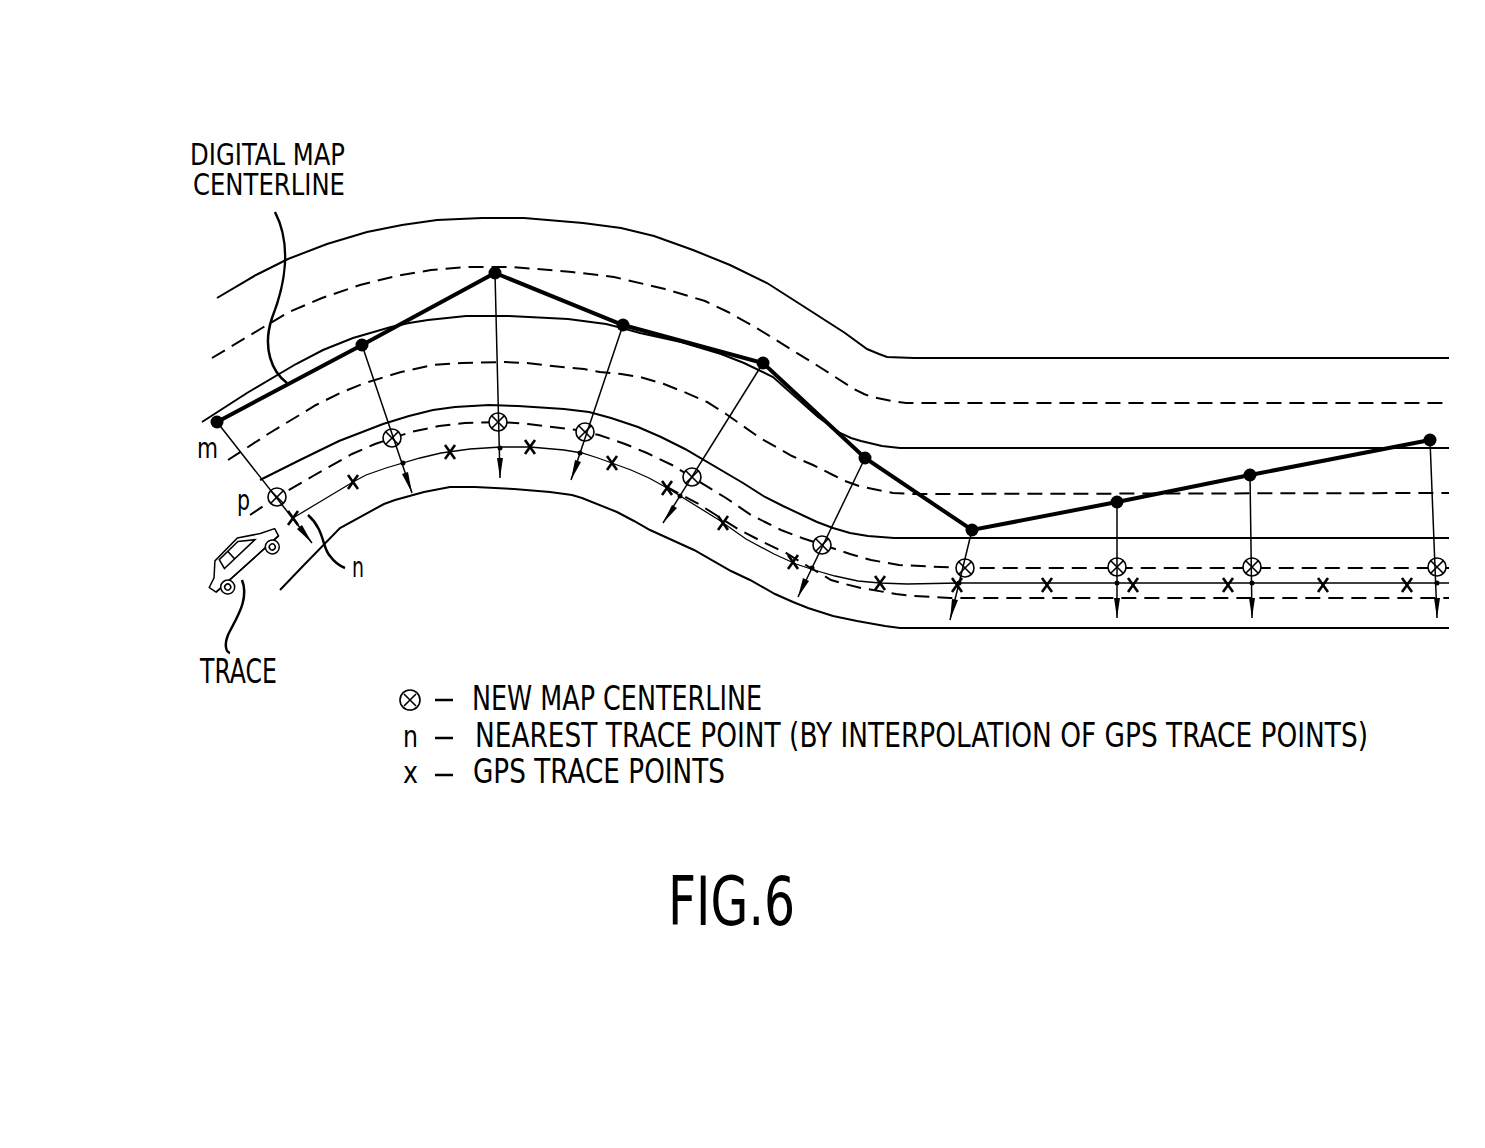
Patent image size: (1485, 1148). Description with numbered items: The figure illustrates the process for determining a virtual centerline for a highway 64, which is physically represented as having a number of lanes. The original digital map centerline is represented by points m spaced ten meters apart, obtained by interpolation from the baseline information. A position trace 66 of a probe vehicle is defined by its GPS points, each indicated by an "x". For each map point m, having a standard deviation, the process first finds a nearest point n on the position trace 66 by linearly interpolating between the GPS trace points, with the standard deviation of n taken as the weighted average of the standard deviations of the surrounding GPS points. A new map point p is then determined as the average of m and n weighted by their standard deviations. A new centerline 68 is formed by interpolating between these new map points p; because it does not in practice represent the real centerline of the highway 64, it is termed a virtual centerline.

The highway 64 is at (893, 308).
The position trace 66 is at (368, 477).
The new centerline 68 is at (447, 425).